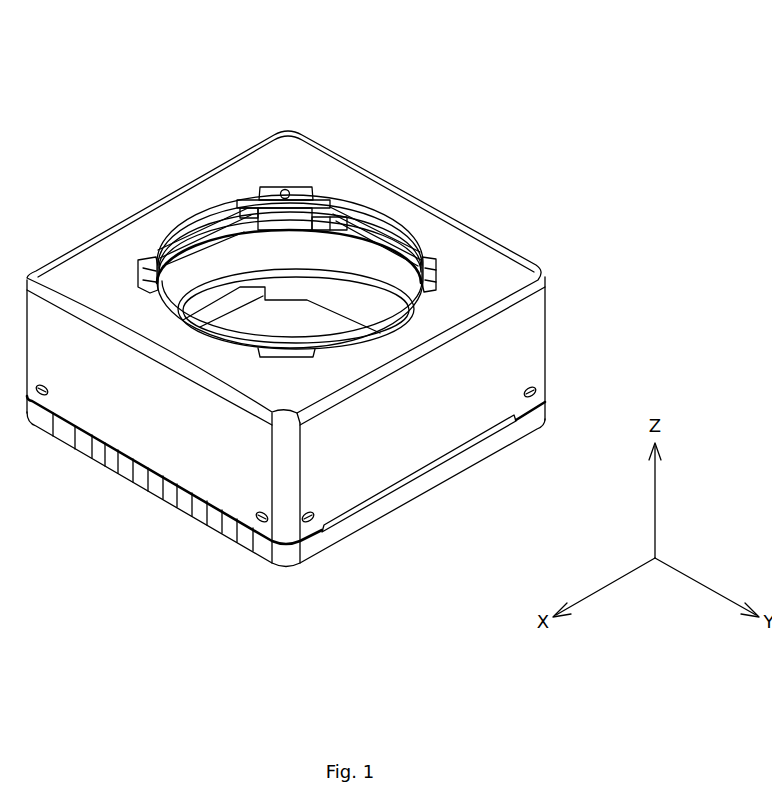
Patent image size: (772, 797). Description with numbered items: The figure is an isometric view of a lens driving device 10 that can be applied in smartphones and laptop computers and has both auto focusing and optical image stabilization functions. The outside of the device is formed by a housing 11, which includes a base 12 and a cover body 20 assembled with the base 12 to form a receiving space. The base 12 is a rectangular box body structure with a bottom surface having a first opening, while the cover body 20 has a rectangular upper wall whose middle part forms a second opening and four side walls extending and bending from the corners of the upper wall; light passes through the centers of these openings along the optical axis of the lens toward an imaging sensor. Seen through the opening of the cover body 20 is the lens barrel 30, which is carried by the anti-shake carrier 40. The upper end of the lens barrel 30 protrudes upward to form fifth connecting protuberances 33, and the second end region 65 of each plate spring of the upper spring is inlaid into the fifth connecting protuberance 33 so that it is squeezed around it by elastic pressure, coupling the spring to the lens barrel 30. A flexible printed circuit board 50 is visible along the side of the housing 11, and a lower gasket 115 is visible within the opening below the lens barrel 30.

The lens driving device 10 is at (194, 145).
The housing 11 is at (603, 106).
The base 12 is at (547, 398).
The cover body 20 is at (385, 222).
The lens barrel 30 is at (337, 260).
The fifth connecting protuberance 33 is at (281, 186).
The anti-shake carrier 40 is at (457, 220).
The flexible printed circuit board 50 is at (127, 467).
The second end region 65 is at (327, 211).
The lower gasket 115 is at (357, 318).